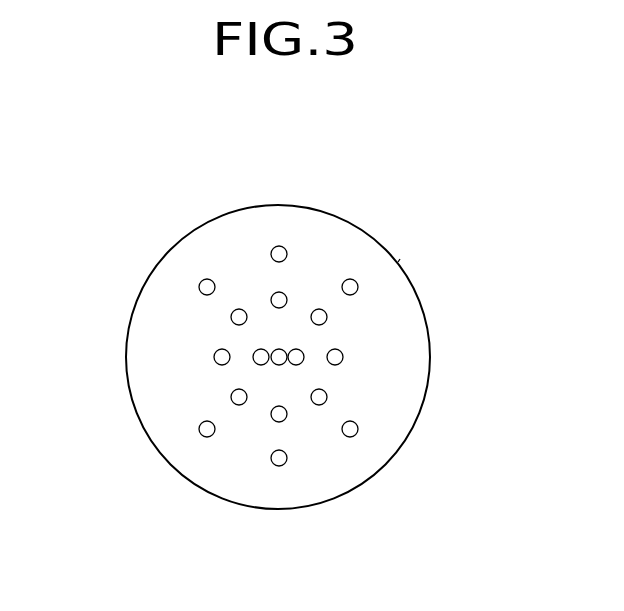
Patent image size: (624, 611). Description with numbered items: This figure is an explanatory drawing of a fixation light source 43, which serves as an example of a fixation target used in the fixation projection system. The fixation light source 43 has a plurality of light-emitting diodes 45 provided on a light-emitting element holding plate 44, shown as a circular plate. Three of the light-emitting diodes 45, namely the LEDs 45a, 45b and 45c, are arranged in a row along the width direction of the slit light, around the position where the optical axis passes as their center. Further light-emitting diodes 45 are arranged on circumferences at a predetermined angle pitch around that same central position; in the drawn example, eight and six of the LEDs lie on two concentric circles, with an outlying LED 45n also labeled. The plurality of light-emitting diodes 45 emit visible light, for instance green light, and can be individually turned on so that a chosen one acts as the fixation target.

The fixation light source 43 is at (346, 220).
The light-emitting element holding plate 44 is at (398, 262).
The light-emitting diodes 45 is at (358, 431).
The light-emitting diode 45a is at (254, 361).
The light-emitting diode 45b is at (280, 366).
The light-emitting diode 45c is at (304, 359).
The gas ejection hole 45n is at (280, 246).